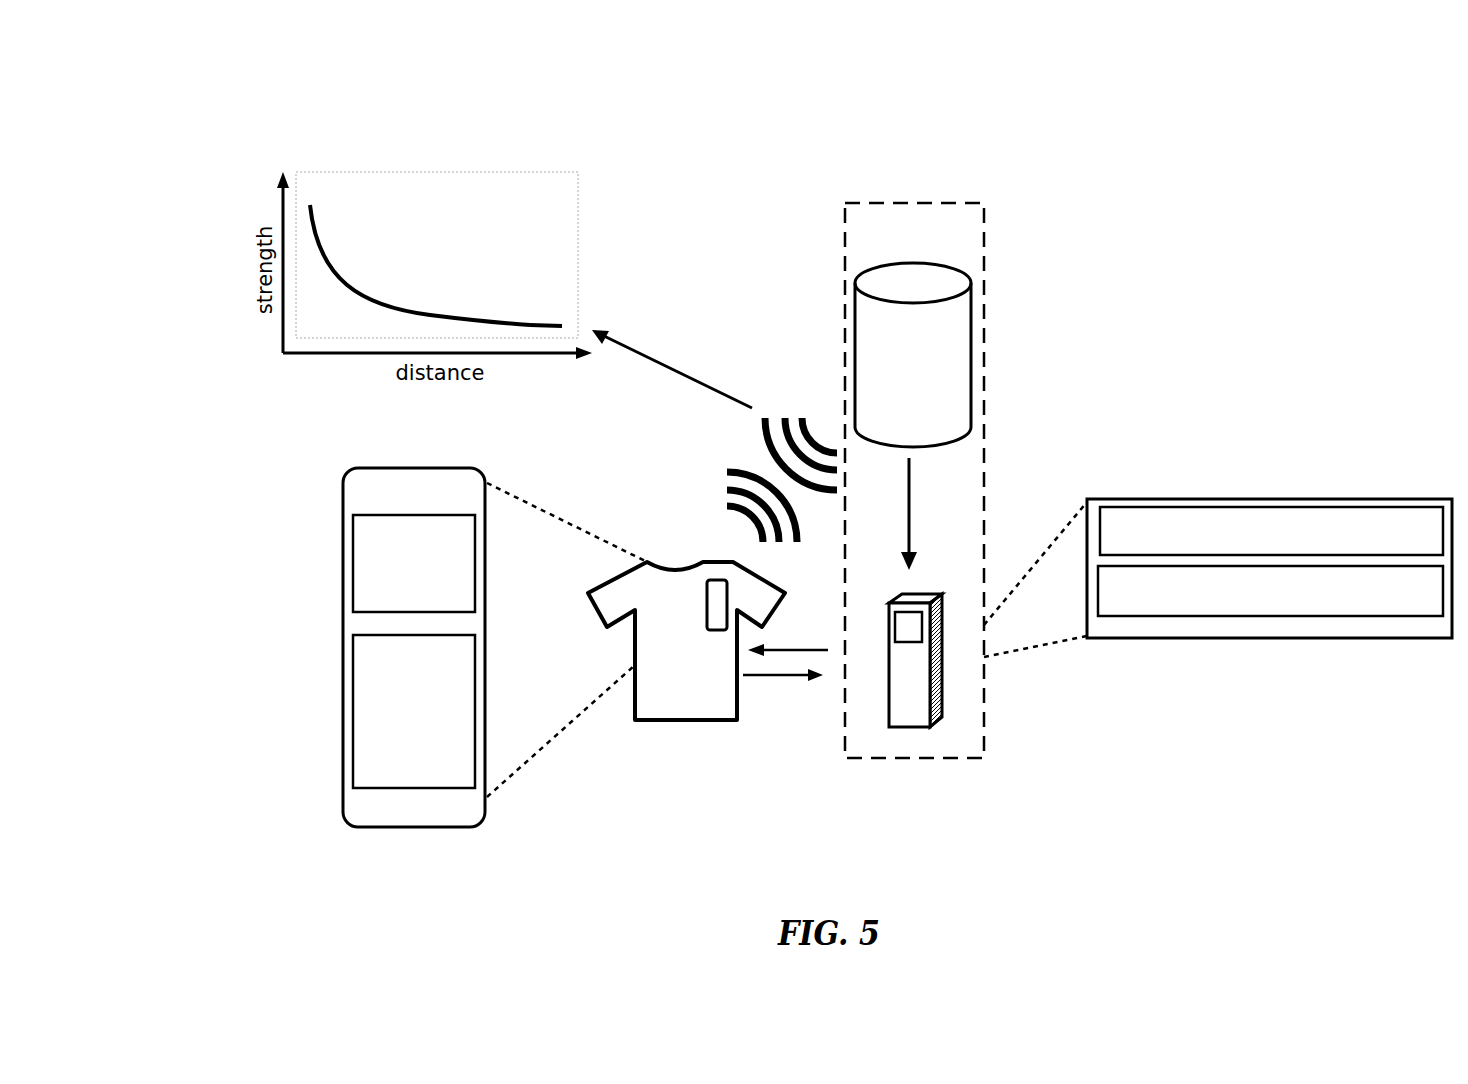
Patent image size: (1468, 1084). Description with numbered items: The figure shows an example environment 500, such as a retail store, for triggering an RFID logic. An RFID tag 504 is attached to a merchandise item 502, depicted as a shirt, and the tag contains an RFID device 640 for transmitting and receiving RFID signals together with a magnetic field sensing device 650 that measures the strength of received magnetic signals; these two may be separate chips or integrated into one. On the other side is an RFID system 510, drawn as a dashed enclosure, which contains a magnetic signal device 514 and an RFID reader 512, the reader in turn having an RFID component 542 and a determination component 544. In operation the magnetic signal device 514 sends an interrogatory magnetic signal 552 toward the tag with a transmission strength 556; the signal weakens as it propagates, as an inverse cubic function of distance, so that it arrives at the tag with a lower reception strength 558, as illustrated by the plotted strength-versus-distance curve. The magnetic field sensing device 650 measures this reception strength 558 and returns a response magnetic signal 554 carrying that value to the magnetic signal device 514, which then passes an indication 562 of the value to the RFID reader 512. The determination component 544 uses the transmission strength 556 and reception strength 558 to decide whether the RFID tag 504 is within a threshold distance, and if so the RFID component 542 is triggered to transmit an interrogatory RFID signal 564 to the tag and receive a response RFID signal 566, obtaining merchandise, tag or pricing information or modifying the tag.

The environment 500 is at (158, 120).
The merchandise item 502 is at (648, 562).
The RFID tag 504 is at (708, 630).
The RFID system 510 is at (870, 202).
The RFID reader 512 is at (936, 718).
The magnetic signal device 514 is at (971, 300).
The RFID component 542 is at (1271, 531).
The determination component 544 is at (1270, 591).
The interrogatory magnetic signal 552 is at (762, 432).
The response magnetic signal 554 is at (727, 508).
The transmission strength 556 is at (314, 160).
The reception strength 558 is at (533, 303).
The indication 562 is at (910, 500).
The interrogatory RFID signal 564 is at (800, 650).
The response RFID signal 566 is at (790, 678).
The RFID device 640 is at (414, 563).
The magnetic field sensing device 650 is at (414, 711).